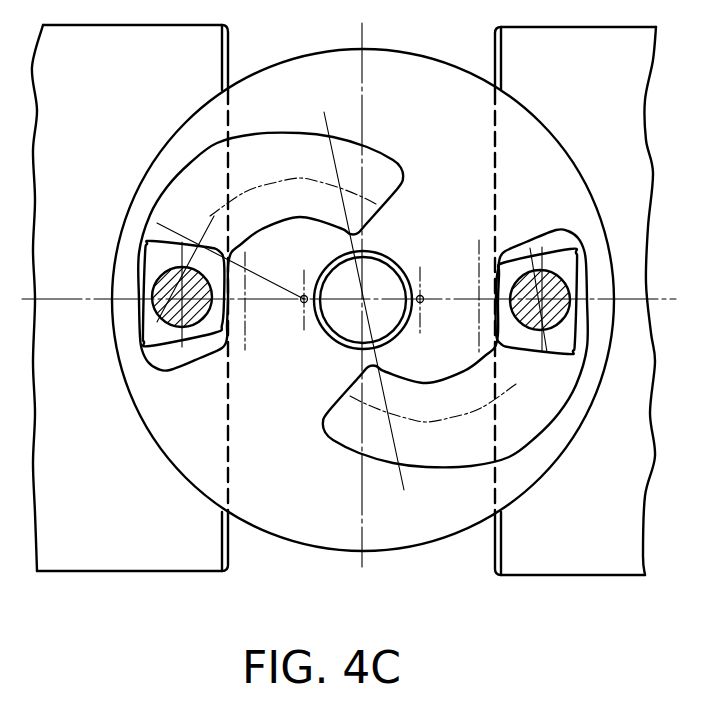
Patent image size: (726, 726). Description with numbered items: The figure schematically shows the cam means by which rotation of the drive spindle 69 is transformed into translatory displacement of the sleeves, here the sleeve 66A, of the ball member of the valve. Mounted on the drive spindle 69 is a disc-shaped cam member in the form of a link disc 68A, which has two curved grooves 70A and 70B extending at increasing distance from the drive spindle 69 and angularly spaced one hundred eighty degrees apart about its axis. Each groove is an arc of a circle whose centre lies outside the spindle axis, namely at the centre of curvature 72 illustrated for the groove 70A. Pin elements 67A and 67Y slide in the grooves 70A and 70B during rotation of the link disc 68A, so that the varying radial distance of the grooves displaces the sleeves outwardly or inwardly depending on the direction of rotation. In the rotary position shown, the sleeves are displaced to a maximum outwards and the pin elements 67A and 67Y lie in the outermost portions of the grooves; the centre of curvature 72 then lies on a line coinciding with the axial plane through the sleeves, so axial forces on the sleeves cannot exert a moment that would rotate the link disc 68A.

The sleeve 66A is at (108, 558).
The pin 67A is at (165, 306).
The pin element 67Y is at (552, 304).
The link disc 68A is at (297, 525).
The drive spindle 69 is at (345, 322).
The curved groove 70A is at (284, 155).
The curved groove 70B is at (446, 450).
The centre of curvature 72 is at (300, 296).